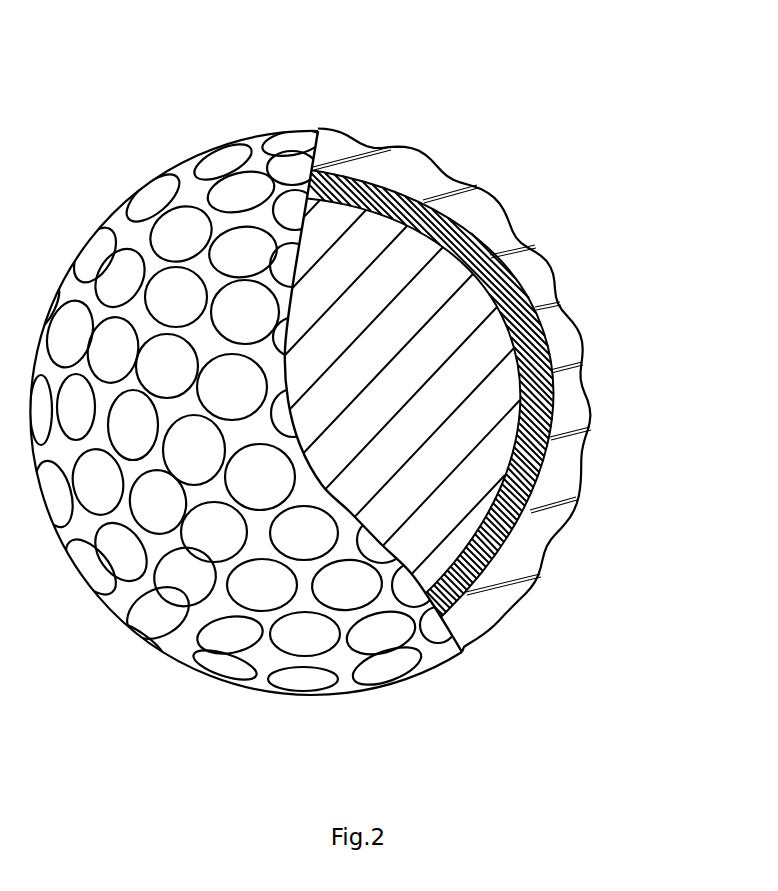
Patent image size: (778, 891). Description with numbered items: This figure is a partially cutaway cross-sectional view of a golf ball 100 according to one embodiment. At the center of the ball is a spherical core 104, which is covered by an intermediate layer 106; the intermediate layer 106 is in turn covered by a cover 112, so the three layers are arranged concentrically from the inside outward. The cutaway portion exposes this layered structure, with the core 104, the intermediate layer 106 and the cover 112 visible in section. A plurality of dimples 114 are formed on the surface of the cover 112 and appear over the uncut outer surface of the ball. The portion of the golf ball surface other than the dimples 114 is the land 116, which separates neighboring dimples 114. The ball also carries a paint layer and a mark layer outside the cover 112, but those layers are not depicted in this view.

The golf ball 100 is at (507, 210).
The spherical core 104 is at (472, 292).
The intermediate layer 106 is at (555, 305).
The cover 112 is at (530, 567).
The dimples 114 is at (343, 140).
The land 116 is at (397, 147).